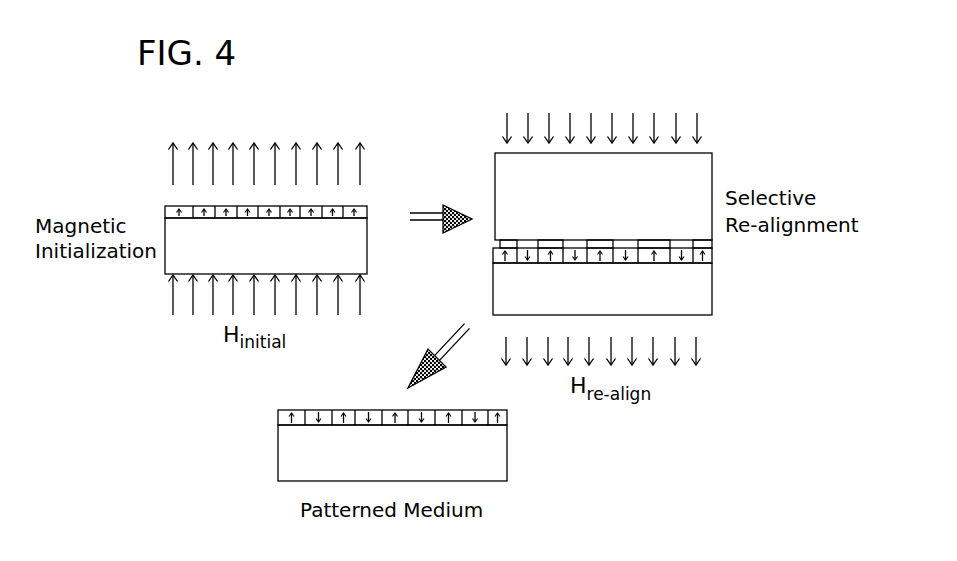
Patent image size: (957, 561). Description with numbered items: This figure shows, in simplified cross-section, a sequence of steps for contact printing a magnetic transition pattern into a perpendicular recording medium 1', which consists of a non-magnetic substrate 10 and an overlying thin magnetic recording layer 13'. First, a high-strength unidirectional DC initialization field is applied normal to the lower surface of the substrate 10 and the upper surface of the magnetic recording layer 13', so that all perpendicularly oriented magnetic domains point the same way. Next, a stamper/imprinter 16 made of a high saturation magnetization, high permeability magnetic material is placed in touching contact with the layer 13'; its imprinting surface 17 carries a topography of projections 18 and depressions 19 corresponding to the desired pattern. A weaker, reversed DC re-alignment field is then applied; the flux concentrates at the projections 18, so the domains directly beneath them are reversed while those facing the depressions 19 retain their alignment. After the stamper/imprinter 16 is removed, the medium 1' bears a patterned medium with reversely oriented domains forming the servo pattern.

The perpendicular recording medium 1' is at (185, 385).
The non-magnetic substrate 10 is at (286, 258).
The magnetic recording layer 13' is at (477, 329).
The stamper/imprinter 16 is at (719, 165).
The imprinting surface 17 is at (494, 243).
The projections 18 is at (528, 257).
The depressions 19 is at (550, 240).